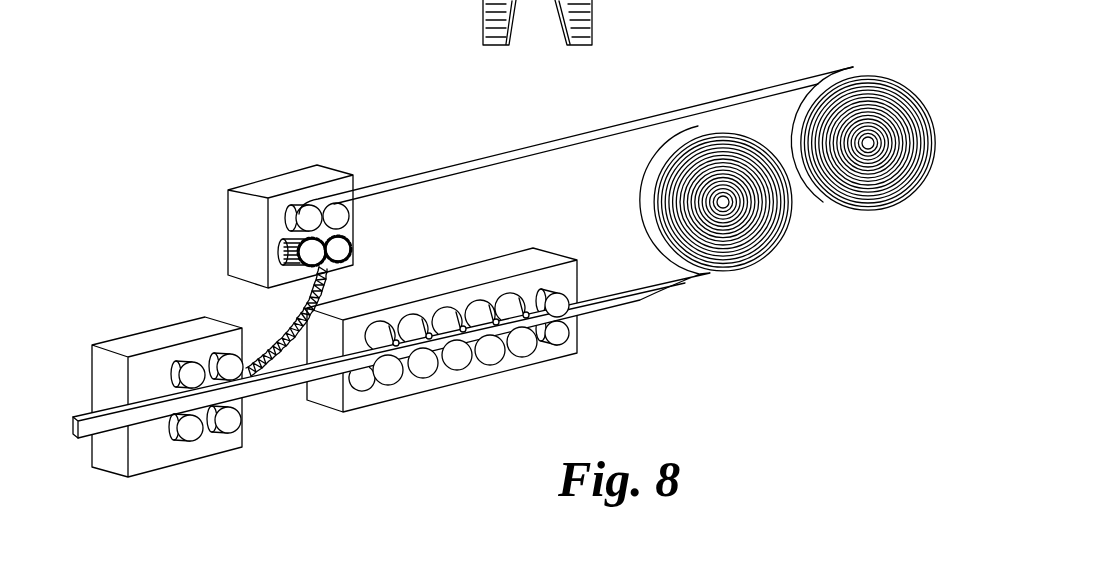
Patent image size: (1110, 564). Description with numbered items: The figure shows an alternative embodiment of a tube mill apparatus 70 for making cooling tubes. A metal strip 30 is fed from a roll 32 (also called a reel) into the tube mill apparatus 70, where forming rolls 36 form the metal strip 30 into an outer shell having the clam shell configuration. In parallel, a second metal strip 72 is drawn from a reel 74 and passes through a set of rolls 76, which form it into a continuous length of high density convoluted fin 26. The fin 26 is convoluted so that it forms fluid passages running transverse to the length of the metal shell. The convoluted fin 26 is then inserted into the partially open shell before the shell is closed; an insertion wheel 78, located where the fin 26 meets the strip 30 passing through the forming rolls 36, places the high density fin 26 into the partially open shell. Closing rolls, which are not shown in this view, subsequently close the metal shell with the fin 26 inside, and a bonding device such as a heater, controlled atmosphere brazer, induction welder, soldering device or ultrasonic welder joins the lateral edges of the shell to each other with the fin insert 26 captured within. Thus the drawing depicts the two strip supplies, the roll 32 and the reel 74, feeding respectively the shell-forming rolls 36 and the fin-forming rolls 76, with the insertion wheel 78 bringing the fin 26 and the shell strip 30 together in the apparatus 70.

The high density convoluted fin 26 is at (328, 296).
The metal strip 30 is at (630, 302).
The roll 32 is at (758, 247).
The forming rolls 36 is at (443, 400).
The tube mill apparatus 70 is at (504, 267).
The metal strip 72 is at (503, 152).
The reel 74 is at (900, 77).
The set of rolls 76 is at (372, 209).
The insertion wheel 78 is at (244, 350).